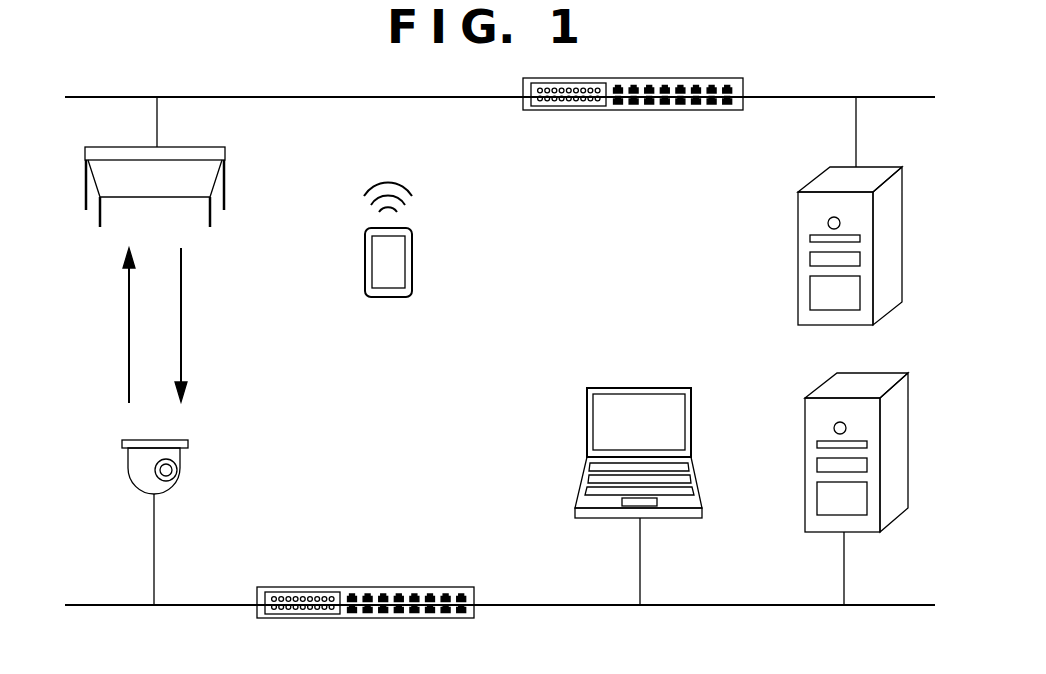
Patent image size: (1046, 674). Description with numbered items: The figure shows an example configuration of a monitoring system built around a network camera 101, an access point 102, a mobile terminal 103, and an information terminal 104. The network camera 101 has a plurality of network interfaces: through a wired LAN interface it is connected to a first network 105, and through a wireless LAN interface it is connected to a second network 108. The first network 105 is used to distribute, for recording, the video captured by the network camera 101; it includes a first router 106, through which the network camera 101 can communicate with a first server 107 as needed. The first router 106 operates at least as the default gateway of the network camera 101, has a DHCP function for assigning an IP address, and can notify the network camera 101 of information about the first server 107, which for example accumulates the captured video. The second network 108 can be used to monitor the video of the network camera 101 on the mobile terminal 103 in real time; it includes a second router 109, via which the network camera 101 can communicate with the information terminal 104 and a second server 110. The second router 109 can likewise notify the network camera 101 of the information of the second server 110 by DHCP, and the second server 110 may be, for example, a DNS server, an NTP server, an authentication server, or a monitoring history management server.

The network camera 101 is at (182, 464).
The access point 102 is at (225, 150).
The mobile terminal 103 is at (412, 260).
The information terminal 104 is at (587, 425).
The first network 105 is at (525, 605).
The first router 106 is at (368, 587).
The first server 107 is at (805, 440).
The second network 108 is at (807, 96).
The second router 109 is at (636, 110).
The second server 110 is at (798, 257).